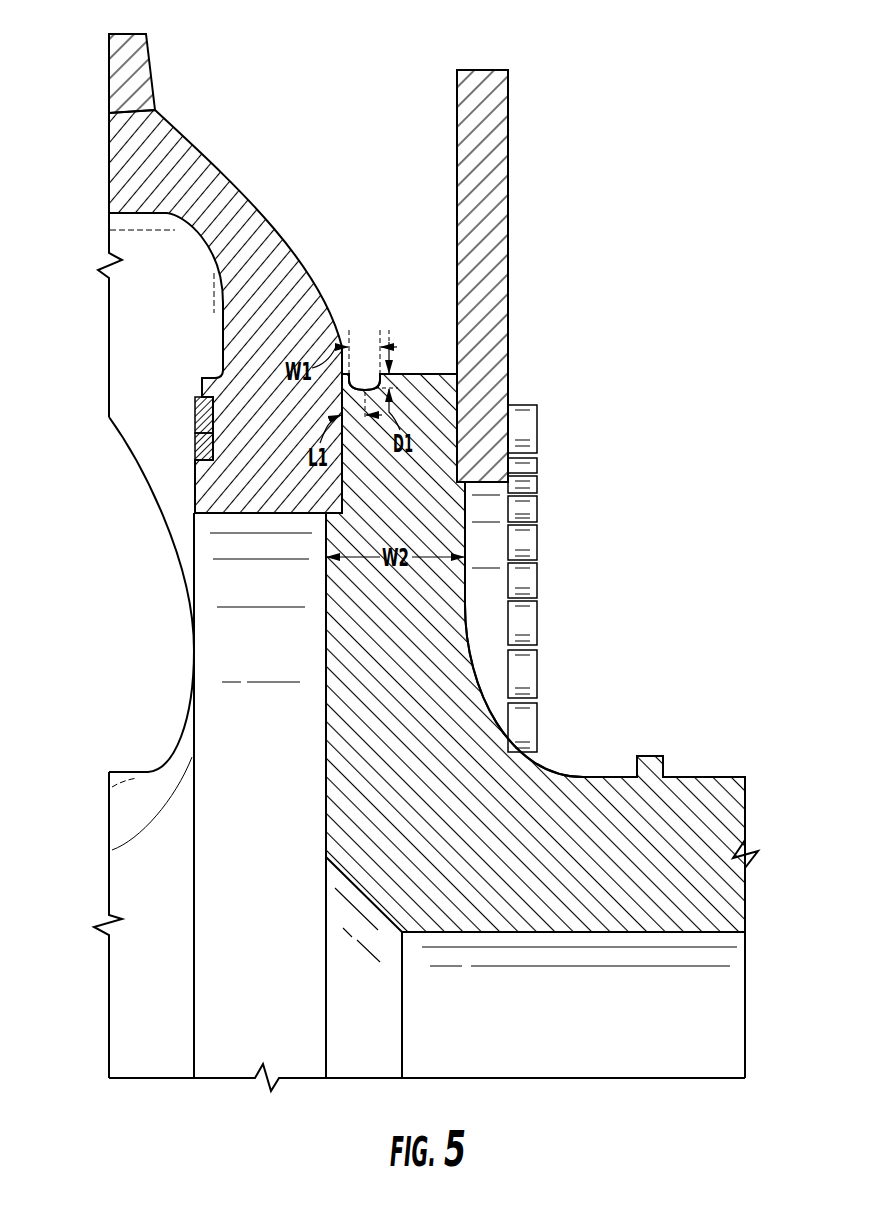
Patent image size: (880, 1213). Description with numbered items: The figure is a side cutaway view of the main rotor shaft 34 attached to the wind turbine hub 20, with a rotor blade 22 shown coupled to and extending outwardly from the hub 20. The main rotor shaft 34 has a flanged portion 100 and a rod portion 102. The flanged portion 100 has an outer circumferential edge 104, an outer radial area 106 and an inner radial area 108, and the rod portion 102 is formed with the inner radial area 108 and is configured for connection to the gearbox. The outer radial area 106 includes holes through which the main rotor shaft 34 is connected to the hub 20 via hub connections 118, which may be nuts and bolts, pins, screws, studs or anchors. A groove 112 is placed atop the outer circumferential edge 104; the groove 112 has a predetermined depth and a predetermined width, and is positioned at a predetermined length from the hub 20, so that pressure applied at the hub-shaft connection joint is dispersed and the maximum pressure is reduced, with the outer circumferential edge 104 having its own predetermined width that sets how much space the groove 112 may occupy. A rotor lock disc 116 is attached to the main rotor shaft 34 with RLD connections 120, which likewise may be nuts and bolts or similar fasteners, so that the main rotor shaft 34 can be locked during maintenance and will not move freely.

The hub 20 is at (289, 166).
The rotor blade 22 is at (132, 60).
The main rotor shaft 34 is at (795, 744).
The flanged portion 100 is at (294, 742).
The rod portion 102 is at (700, 673).
The outer circumferential edge 104 is at (416, 372).
The outer radial area 106 is at (437, 447).
The inner radial area 108 is at (463, 697).
The groove 112 is at (366, 385).
The rotor lock disc 116 is at (492, 148).
The hub connections 118 is at (205, 427).
The RLD connections 120 is at (530, 577).